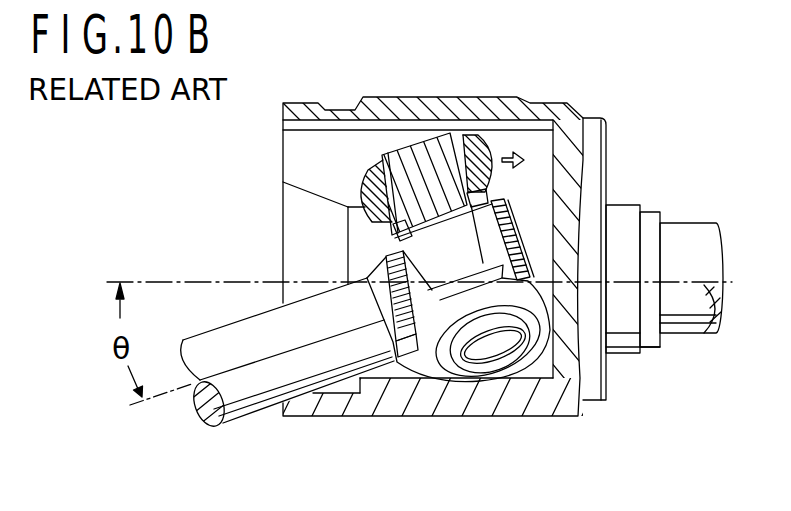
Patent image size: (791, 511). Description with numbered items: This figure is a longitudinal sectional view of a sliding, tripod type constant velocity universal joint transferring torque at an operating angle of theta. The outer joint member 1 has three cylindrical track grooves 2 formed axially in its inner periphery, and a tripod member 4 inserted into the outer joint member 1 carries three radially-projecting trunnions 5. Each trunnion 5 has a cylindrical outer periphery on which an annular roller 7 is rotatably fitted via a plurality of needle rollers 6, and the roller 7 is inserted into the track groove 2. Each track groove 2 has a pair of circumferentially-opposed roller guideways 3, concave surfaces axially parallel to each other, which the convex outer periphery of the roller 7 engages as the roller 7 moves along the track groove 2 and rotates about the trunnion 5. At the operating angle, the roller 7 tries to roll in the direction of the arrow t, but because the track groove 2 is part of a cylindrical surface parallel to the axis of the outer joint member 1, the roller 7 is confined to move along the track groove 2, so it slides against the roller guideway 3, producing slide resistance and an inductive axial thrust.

The outer joint member 1 is at (600, 132).
The track groove 2 is at (513, 140).
The roller guideway 3 is at (302, 163).
The tripod member 4 is at (490, 238).
The trunnion 5 is at (397, 163).
The needle roller 6 is at (433, 128).
The roller 7 is at (470, 143).